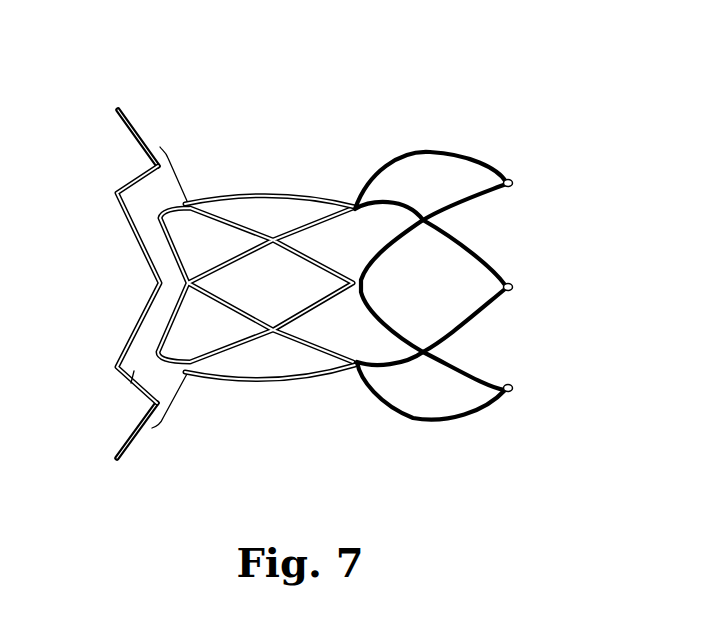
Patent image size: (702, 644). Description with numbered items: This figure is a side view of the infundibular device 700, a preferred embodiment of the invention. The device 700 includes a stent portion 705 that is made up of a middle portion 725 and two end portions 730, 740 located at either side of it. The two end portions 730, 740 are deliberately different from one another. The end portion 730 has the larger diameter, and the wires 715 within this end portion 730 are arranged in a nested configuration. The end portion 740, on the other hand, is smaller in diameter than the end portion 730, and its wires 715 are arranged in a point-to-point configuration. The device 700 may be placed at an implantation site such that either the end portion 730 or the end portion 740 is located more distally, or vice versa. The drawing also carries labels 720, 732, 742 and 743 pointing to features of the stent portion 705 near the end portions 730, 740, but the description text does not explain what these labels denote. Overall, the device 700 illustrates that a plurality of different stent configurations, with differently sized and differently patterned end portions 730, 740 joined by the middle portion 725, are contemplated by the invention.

The device 700 is at (357, 125).
The stent portion 705 is at (282, 179).
The wires 715 is at (270, 403).
The upper connecting ring 720 is at (222, 197).
The middle portion 725 is at (256, 320).
The end portion 730 is at (111, 311).
The anchoring arms 732 is at (138, 432).
The end portion 740 is at (476, 332).
The outflow struts 742 is at (478, 397).
The eyelets 743 is at (513, 187).